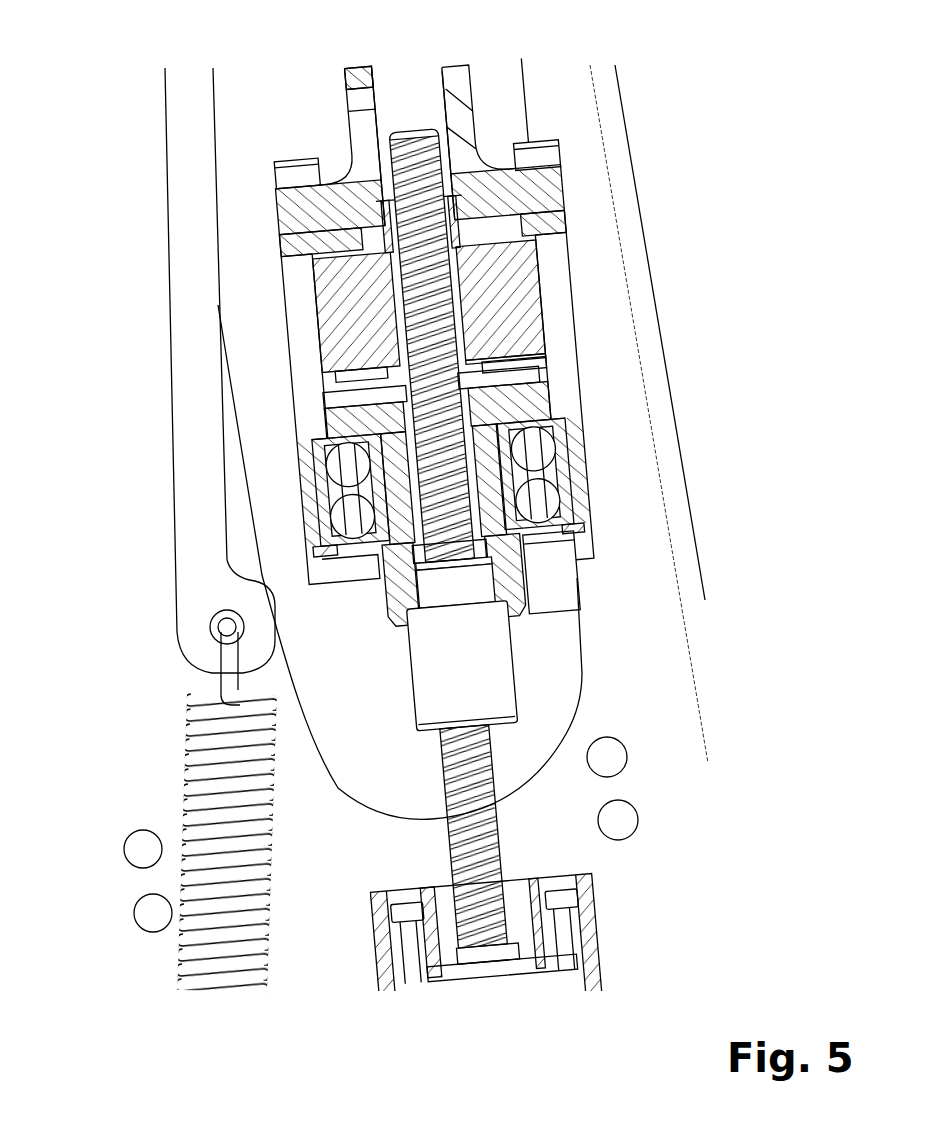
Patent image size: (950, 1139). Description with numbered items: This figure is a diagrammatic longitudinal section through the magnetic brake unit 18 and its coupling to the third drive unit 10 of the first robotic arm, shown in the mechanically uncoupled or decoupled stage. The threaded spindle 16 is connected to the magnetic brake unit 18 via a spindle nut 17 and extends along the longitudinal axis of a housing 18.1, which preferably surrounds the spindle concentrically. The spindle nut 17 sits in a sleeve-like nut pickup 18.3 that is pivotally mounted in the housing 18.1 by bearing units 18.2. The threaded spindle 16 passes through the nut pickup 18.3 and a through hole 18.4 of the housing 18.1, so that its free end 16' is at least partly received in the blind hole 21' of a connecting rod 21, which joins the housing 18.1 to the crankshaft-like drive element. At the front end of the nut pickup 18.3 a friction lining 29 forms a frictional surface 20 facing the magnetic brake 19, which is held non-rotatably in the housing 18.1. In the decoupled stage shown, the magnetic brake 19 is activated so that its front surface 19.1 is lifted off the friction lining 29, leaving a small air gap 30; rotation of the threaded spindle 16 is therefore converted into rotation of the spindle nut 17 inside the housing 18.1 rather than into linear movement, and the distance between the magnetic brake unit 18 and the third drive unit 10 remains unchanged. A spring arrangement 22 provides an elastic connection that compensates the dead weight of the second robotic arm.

The third drive unit 10 is at (641, 963).
The threaded spindle 16 is at (555, 552).
The free end of the threaded spindle 16' is at (564, 180).
The spindle nut 17 is at (500, 657).
The magnetic brake unit 18 is at (610, 329).
The housing 18.1 is at (303, 330).
The bearing units 18.2 is at (333, 495).
The nut pickup 18.3 is at (510, 580).
The through hole 18.4 is at (313, 304).
The magnetic brake 19 is at (337, 290).
The front surface of the magnetic brake 19.1 is at (487, 367).
The frictional surface 20 is at (337, 395).
The connecting rod 21 is at (364, 437).
The blind hole 21' is at (530, 101).
The spring arrangement 22 is at (139, 737).
The friction lining 29 is at (483, 385).
The air gap 30 is at (537, 370).